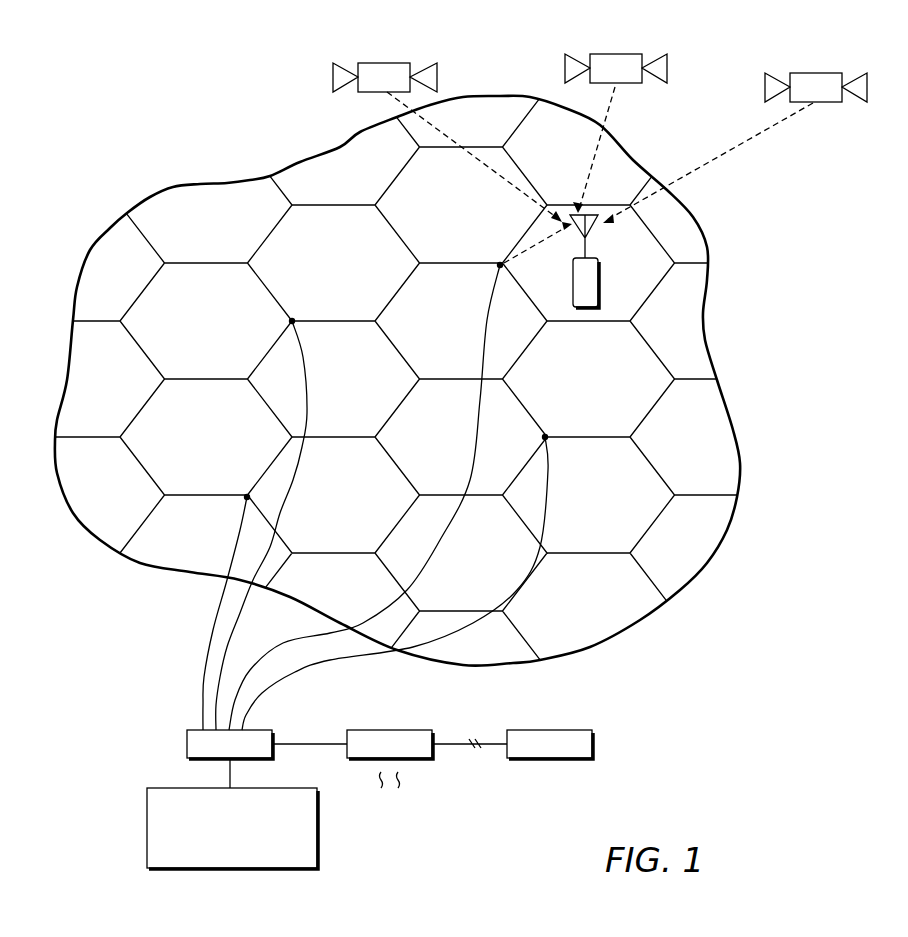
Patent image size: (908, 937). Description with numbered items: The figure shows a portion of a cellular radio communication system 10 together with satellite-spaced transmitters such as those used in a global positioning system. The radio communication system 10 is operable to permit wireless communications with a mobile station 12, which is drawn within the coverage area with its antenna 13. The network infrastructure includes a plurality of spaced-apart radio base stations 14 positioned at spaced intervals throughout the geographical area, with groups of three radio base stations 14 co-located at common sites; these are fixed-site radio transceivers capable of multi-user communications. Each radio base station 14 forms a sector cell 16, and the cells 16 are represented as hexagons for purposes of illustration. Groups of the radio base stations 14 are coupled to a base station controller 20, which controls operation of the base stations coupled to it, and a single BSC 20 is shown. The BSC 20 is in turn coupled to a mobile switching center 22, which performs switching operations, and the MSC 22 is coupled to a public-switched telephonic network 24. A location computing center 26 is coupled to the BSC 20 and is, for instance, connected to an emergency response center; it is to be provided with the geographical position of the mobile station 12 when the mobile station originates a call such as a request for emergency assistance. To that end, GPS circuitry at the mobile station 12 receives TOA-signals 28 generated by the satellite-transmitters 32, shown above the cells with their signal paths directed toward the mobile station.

The radio communication system 10 is at (808, 316).
The mobile station 12 is at (600, 282).
The antenna of mobile station 13 is at (542, 308).
The radio base station 14 is at (392, 478).
The sector cell 16 is at (196, 232).
The base station controller 20 is at (257, 729).
The mobile switching center 22 is at (415, 729).
The public-switched telephonic network 24 is at (575, 729).
The location computing center 26 is at (283, 787).
The TOA-signals 28 is at (585, 176).
The satellite-transmitter 32 is at (600, 64).